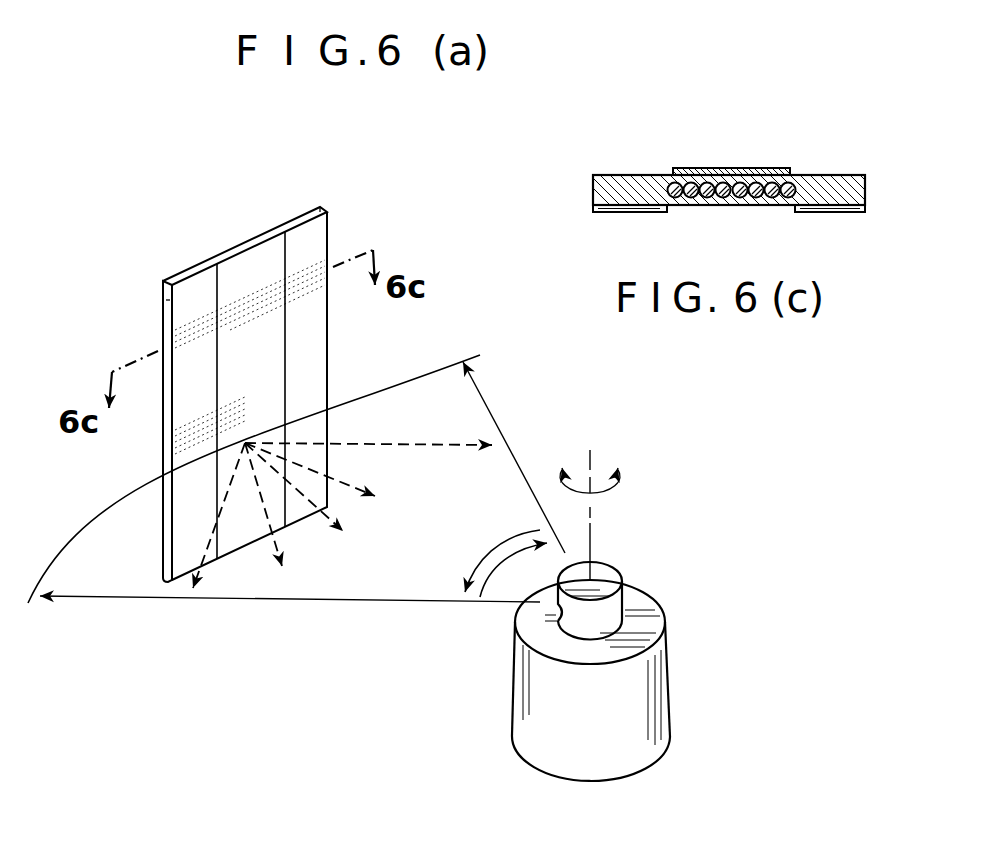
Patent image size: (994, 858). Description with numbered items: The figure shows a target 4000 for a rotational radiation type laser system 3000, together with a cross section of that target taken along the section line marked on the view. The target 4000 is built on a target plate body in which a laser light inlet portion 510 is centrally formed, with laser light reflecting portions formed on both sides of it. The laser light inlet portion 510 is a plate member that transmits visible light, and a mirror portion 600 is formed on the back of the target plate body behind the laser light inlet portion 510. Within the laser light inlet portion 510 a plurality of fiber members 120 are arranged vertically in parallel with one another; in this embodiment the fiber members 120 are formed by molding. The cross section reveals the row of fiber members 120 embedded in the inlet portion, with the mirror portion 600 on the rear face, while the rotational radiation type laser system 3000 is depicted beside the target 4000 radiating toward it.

The target 4000 is at (170, 262).
The laser light inlet portion 510 is at (243, 273).
The mirror portion 600 is at (712, 173).
The fiber member 120 is at (690, 200).
The rotational radiation type laser system 3000 is at (662, 688).